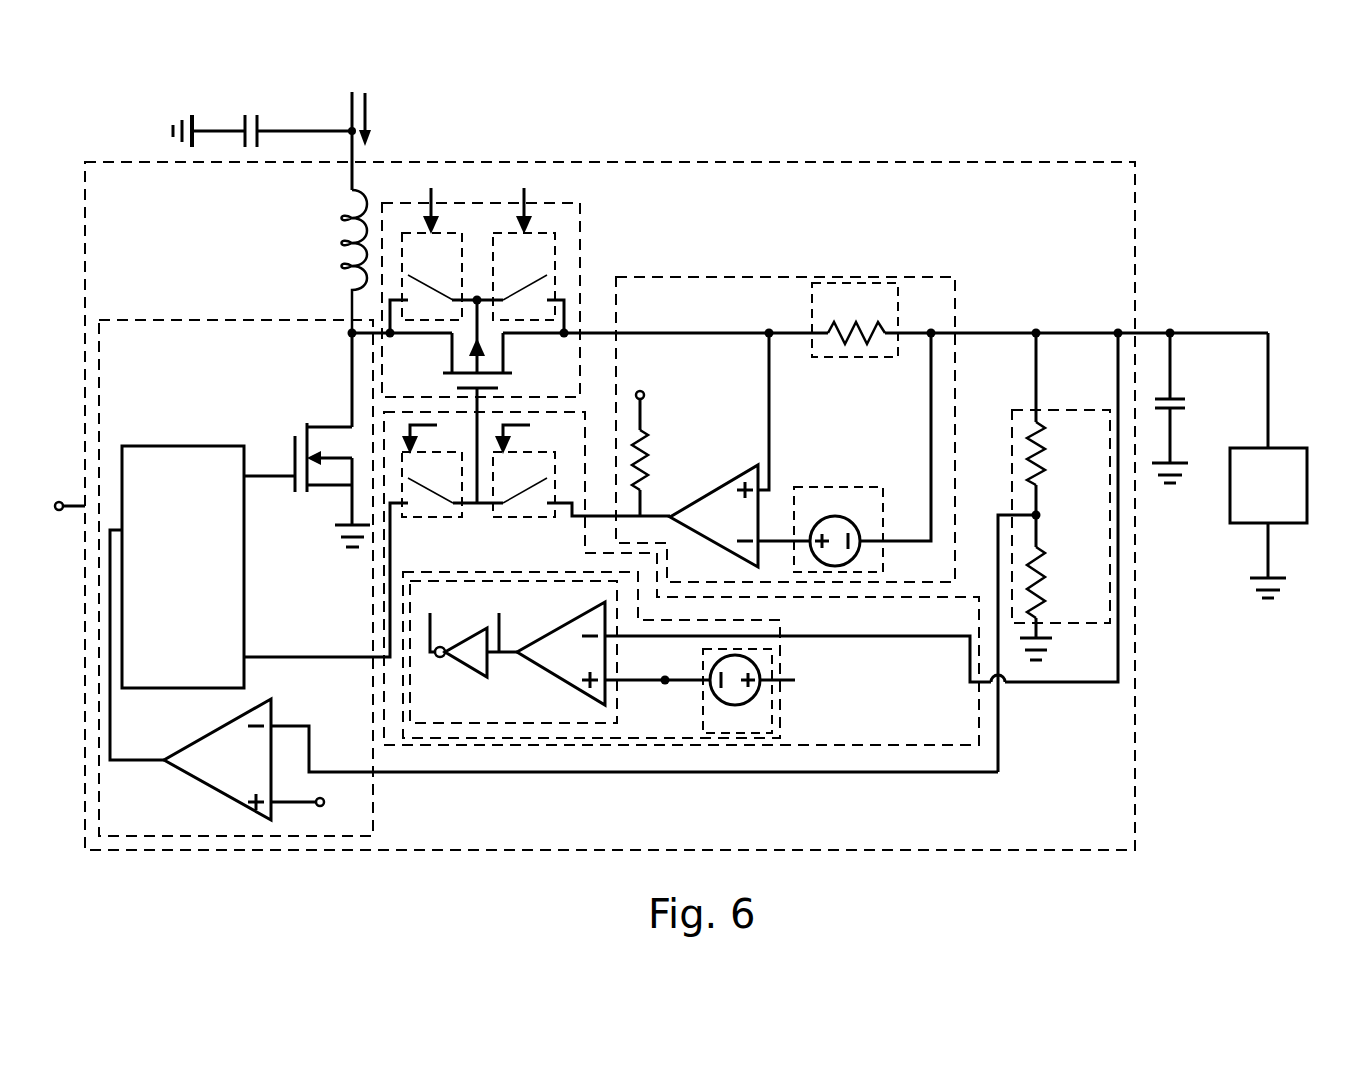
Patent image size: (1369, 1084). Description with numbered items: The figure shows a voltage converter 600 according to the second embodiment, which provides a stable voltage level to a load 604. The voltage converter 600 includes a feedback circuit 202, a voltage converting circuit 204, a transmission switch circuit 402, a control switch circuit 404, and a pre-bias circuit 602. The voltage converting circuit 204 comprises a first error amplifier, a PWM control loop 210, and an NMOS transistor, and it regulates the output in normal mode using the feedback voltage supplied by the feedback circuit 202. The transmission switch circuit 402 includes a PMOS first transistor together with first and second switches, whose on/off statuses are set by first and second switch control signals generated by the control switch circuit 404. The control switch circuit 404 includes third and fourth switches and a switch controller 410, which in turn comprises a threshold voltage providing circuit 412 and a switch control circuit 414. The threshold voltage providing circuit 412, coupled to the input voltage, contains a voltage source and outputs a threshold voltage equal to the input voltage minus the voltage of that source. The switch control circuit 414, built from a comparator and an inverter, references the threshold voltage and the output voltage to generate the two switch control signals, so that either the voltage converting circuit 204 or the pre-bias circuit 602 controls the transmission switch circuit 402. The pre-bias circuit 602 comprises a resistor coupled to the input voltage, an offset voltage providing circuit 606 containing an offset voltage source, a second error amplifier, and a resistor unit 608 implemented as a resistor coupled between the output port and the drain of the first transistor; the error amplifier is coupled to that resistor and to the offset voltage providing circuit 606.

The voltage converter 600 is at (1190, 142).
The transmission switch circuit 402 is at (580, 226).
The pre-bias circuit 602 is at (697, 277).
The resistor unit 608 is at (850, 358).
The offset voltage providing circuit 606 is at (836, 484).
The load 604 is at (1307, 487).
The feedback circuit 202 is at (1110, 566).
The PWM control loop 210 is at (182, 446).
The voltage converting circuit 204 is at (373, 806).
The switch control circuit 414 is at (513, 723).
The switch controller 410 is at (560, 738).
The control switch circuit 404 is at (600, 747).
The threshold voltage providing circuit 412 is at (738, 733).